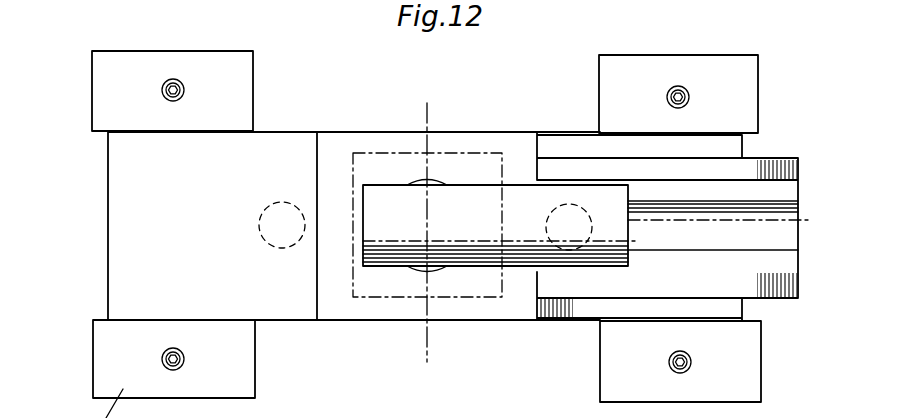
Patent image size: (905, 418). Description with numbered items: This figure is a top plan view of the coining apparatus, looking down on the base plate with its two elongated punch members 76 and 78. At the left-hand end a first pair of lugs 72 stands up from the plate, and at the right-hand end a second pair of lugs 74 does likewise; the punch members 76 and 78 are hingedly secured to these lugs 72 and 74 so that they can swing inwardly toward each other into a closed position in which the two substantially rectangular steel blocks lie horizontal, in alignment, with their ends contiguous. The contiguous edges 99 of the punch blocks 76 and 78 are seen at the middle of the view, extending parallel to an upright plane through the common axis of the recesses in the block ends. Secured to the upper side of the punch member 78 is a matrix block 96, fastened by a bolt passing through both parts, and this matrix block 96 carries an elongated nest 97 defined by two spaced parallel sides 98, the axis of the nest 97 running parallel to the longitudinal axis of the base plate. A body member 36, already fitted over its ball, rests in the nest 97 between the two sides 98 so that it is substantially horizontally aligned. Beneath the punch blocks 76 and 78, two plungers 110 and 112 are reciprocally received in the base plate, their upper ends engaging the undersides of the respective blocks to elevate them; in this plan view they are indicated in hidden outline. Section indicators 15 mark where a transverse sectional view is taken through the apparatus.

The section line 15- 15 is at (308, 225).
The body member 36 is at (484, 203).
The first pair of lugs 72 is at (97, 73).
The second pair of lugs 74 is at (752, 83).
The punch member 76 is at (118, 274).
The punch member 78 is at (507, 312).
The matrix block 96 is at (740, 292).
The nest 97 is at (769, 237).
The sides 98 is at (729, 194).
The contiguous edges 99 is at (427, 300).
The plunger 110 is at (266, 241).
The plunger 112 is at (586, 212).